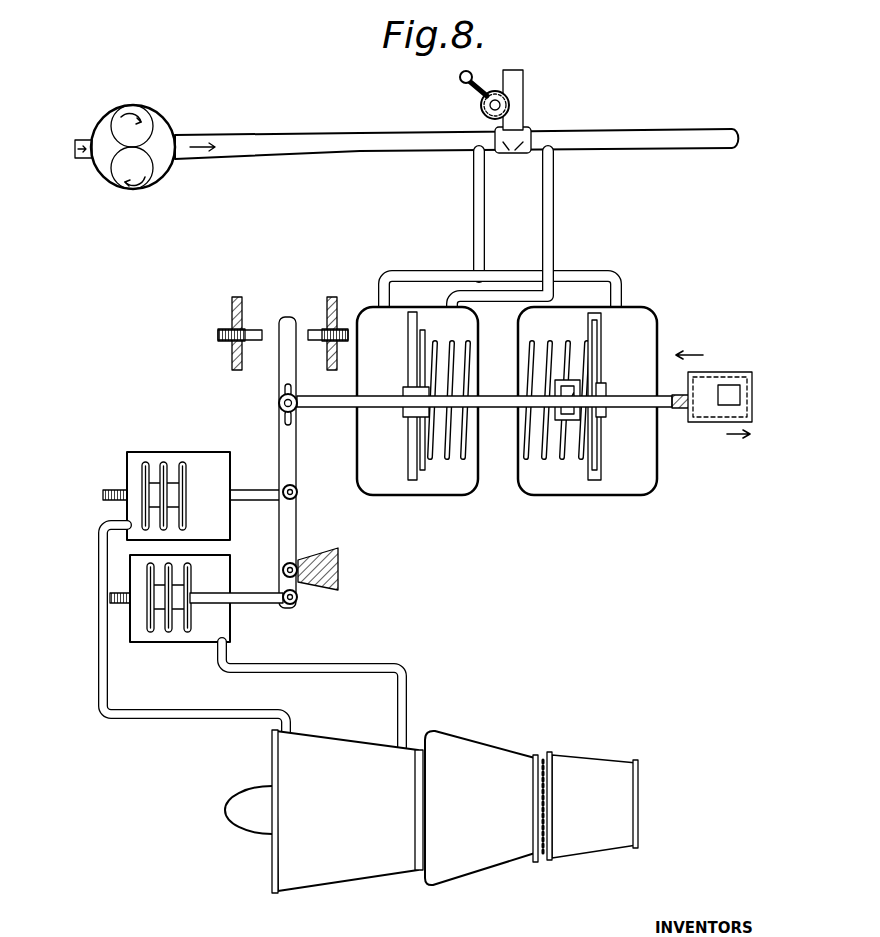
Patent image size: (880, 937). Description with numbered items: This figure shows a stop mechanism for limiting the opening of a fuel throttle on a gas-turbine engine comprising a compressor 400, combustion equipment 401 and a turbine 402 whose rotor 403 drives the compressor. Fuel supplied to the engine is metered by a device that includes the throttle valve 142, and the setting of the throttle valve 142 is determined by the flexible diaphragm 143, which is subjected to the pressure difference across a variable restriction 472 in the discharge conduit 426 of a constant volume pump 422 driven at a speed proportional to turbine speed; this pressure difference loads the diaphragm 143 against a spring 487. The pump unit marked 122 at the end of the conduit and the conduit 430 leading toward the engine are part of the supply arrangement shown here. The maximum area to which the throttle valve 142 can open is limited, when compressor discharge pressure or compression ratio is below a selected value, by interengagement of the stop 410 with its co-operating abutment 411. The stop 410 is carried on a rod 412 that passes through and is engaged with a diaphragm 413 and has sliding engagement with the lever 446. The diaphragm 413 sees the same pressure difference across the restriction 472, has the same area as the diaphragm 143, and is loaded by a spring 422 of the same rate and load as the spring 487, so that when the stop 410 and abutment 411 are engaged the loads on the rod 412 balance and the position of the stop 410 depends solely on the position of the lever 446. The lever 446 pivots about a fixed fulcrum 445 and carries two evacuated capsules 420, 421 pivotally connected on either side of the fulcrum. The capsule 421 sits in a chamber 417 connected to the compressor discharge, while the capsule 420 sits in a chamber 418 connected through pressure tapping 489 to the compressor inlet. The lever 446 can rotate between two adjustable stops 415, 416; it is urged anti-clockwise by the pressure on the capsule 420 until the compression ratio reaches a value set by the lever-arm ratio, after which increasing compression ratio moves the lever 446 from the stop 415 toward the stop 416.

The pump 122 is at (158, 168).
The discharge conduit 426 is at (378, 137).
The variable restriction 472 is at (527, 137).
The flexible diaphragm 143 is at (600, 347).
The constant volume pump / spring 422 is at (458, 460).
The diaphragm 413 is at (415, 453).
The spring 487 is at (543, 458).
The co-operating abutment 411 is at (578, 470).
The stop 410 is at (566, 422).
The rod 412 is at (320, 412).
The throttle valve 142 is at (732, 422).
The adjustable stop 415 is at (232, 332).
The adjustable stop 416 is at (326, 332).
The lever 446 is at (288, 447).
The fixed fulcrum 445 is at (297, 565).
The chamber 418 is at (212, 457).
The evacuated capsule 420 is at (162, 467).
The evacuated capsule 421 is at (195, 620).
The chamber 417 is at (220, 612).
The pressure tapping 489 is at (100, 685).
The conduit 430 is at (410, 674).
The compressor 400 is at (348, 870).
The combustion equipment 401 is at (503, 850).
The rotor 403 is at (547, 863).
The turbine 402 is at (538, 752).